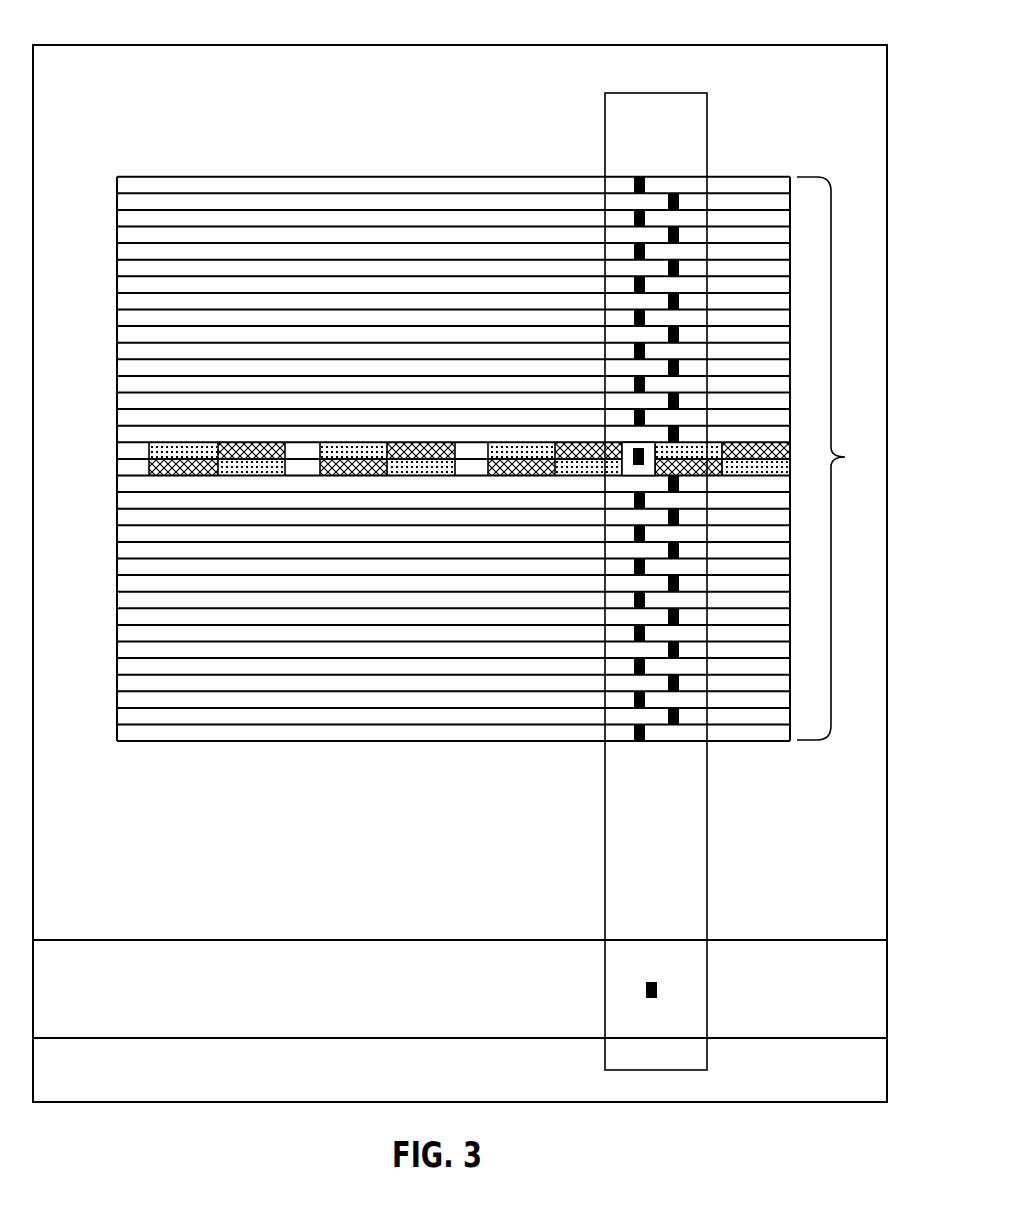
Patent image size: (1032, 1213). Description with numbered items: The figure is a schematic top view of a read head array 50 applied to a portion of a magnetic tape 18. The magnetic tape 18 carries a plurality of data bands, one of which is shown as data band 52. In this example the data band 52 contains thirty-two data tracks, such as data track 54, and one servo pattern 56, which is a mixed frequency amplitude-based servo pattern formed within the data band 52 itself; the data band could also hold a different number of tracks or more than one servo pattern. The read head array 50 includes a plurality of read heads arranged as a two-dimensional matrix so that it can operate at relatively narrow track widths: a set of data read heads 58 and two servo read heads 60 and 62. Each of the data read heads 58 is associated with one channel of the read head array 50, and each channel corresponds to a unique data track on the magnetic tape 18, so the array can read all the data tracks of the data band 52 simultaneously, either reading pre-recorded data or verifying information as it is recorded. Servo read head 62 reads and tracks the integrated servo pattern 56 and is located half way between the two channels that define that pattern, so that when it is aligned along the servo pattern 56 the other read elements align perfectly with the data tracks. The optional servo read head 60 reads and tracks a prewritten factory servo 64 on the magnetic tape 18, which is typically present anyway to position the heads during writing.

The magnetic tape 18 is at (436, 46).
The read head array 50 is at (687, 93).
The data band 52 is at (520, 482).
The data track 54 is at (798, 214).
The servo pattern 56 is at (811, 457).
The data read heads 58 is at (628, 733).
The servo read head 60 is at (641, 988).
The servo read head 62 is at (653, 446).
The prewritten factory servo 64 is at (780, 938).